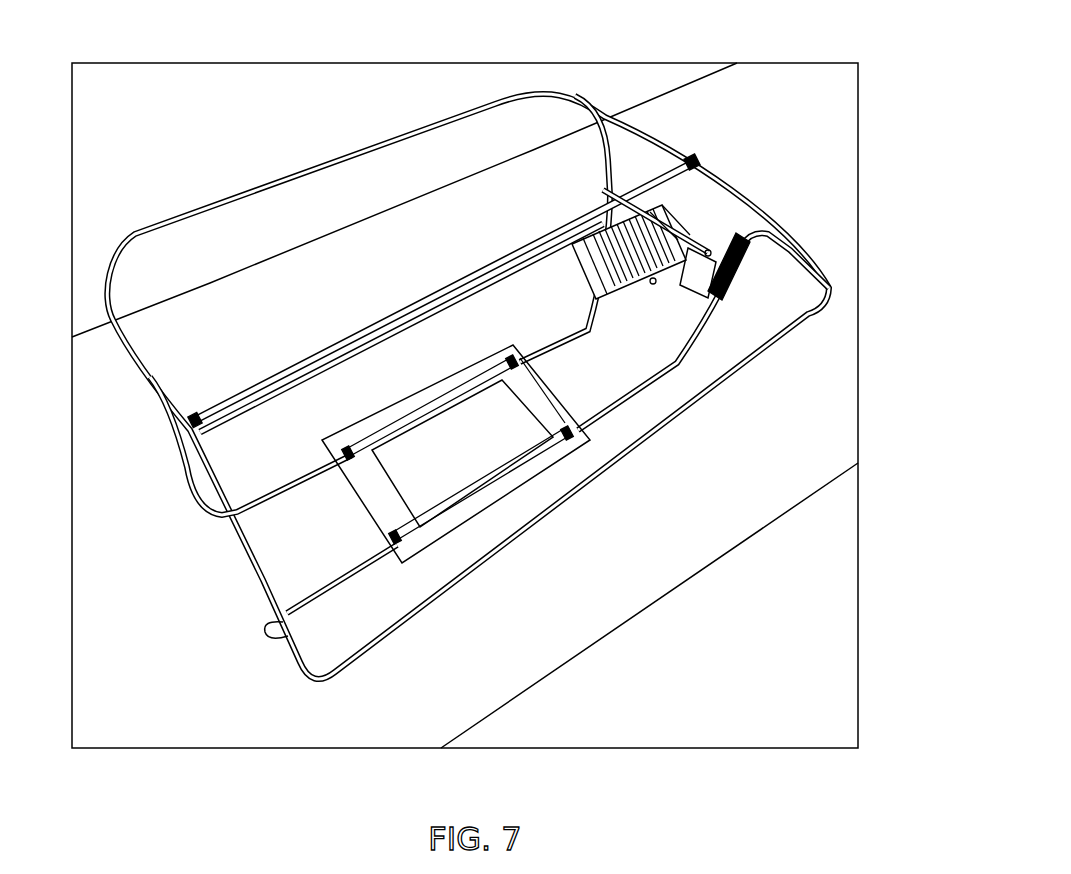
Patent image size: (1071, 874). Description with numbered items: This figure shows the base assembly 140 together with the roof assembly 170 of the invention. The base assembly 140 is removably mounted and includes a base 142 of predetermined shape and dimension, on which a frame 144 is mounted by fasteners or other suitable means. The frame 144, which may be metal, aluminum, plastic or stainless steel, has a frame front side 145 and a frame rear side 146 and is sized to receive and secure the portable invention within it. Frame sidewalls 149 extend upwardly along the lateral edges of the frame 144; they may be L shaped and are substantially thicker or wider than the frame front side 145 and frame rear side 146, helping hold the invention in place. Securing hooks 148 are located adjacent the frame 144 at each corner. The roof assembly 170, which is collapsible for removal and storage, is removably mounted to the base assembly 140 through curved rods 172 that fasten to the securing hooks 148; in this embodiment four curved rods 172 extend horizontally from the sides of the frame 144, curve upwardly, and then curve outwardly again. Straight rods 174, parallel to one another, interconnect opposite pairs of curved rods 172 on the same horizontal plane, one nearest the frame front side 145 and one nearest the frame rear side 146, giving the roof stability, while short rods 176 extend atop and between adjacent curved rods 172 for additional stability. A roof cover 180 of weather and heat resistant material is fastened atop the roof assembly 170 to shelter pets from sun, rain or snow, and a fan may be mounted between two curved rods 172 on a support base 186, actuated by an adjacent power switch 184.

The base assembly 140 is at (440, 556).
The base 142 is at (568, 452).
The frame 144 is at (402, 503).
The frame front side 145 is at (474, 493).
The frame rear side 146 is at (452, 405).
The securing hooks 148 is at (396, 560).
The frame sidewalls 149 is at (540, 423).
The roof assembly 170 is at (112, 336).
The curved rods 172 is at (540, 340).
The straight rods 174 is at (229, 200).
The short rods 176 is at (650, 140).
The roof cover 180 is at (347, 350).
The power switch 184 is at (710, 250).
The support base 186 is at (695, 247).